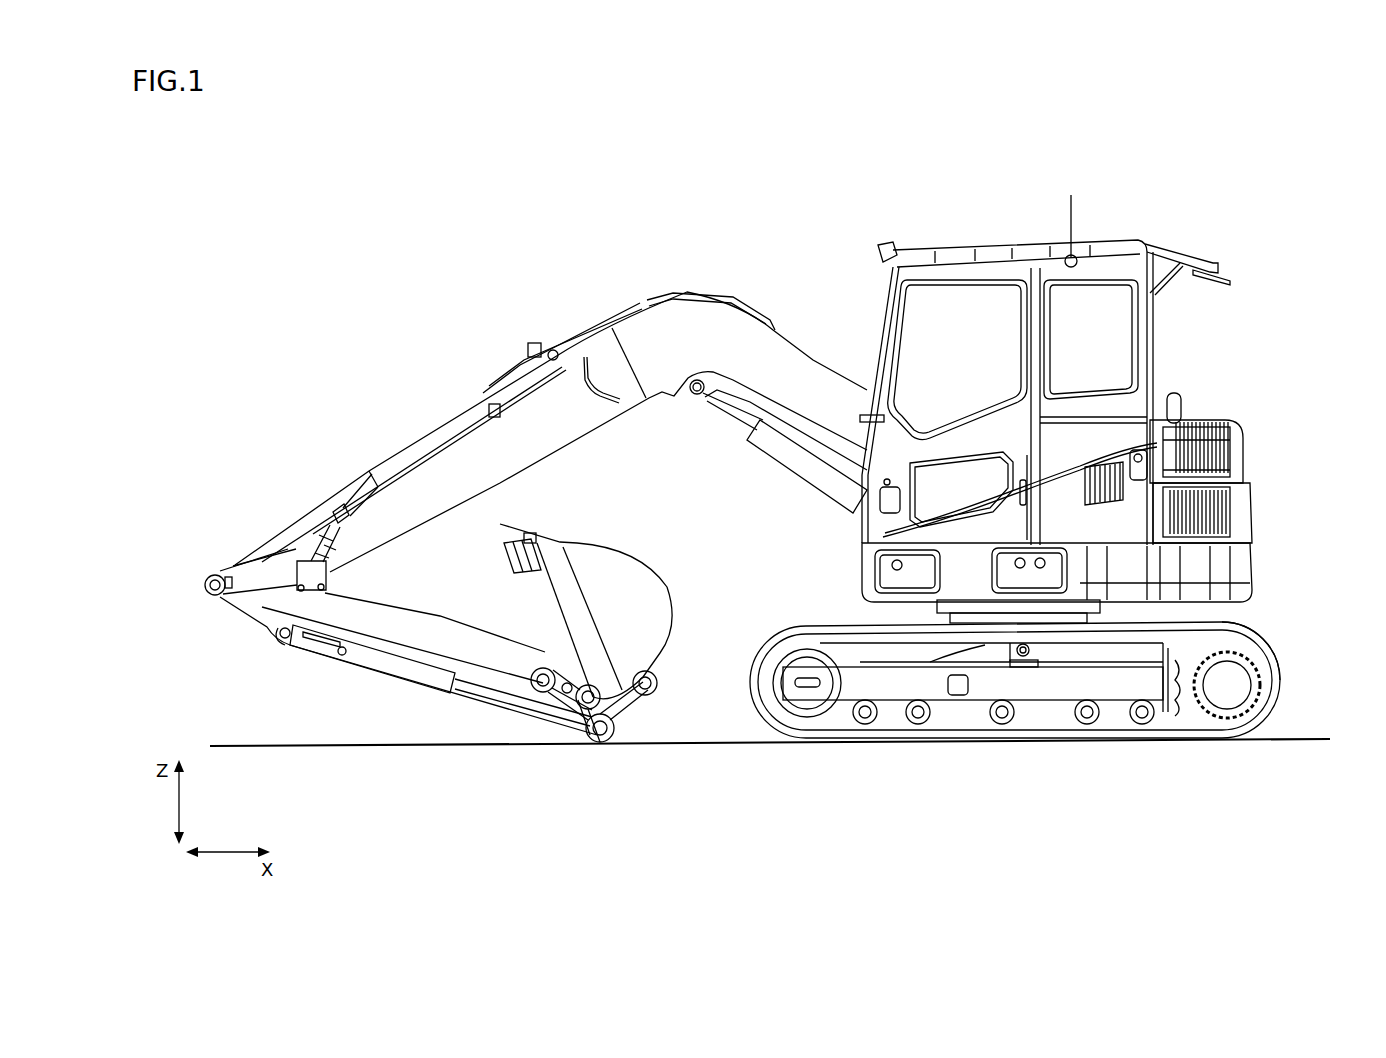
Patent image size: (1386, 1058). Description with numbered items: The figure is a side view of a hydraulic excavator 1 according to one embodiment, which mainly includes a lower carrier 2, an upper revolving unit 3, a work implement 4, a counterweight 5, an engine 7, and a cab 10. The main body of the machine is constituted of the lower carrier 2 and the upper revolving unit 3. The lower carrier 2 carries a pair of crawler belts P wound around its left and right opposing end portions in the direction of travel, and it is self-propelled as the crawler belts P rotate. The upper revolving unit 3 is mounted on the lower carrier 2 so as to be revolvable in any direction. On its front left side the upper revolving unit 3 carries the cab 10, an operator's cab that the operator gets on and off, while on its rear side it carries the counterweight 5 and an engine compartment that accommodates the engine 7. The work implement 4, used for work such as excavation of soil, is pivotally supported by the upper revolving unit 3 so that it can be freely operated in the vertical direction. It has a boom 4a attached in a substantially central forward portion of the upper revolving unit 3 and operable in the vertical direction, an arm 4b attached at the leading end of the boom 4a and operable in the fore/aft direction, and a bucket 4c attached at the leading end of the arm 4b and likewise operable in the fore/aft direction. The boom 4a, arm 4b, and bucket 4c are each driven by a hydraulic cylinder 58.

The hydraulic excavator 1 is at (1200, 168).
The lower carrier 2 is at (740, 700).
The upper revolving unit 3 is at (862, 572).
The work implement 4 is at (692, 267).
The boom 4a is at (503, 447).
The arm 4b is at (370, 623).
The bucket 4c is at (622, 577).
The counterweight 5 is at (1240, 544).
The engine 7 is at (1233, 463).
The cab 10 is at (877, 218).
The hydraulic cylinder 58 is at (397, 460).
The crawler belt P is at (1262, 646).